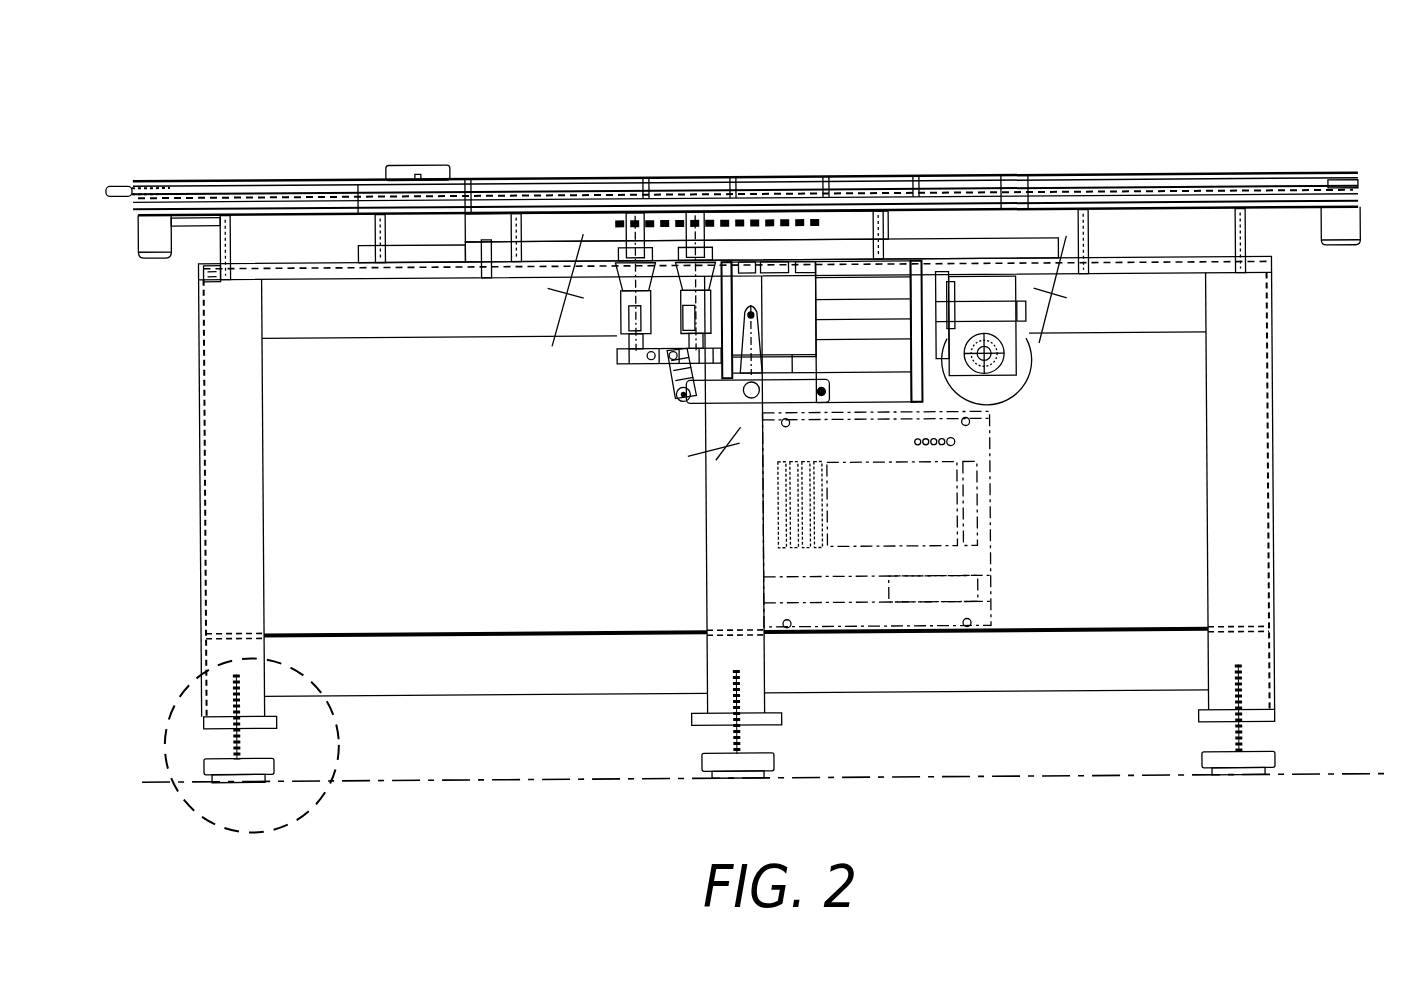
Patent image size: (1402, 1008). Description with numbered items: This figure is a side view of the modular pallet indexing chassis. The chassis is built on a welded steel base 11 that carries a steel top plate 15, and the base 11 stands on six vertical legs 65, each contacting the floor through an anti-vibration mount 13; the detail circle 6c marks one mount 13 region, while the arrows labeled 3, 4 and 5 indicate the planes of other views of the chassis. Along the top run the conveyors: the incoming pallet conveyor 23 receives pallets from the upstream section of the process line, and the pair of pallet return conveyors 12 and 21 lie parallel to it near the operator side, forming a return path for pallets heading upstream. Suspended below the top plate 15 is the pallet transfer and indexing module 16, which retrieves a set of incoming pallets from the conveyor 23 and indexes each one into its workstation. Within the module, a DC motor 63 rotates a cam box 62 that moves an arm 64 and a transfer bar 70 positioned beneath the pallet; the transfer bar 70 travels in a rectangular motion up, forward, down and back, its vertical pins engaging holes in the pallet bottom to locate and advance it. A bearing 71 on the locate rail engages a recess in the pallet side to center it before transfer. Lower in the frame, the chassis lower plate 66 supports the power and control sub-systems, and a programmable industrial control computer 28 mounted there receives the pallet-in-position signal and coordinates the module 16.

The welded steel base 11 is at (203, 565).
The pallet return conveyor 12 is at (1356, 187).
The anti-vibration mount 13 is at (205, 775).
The top plate 15 is at (203, 268).
The pallet transfer and indexing module 16 is at (650, 376).
The pallet return conveyor 21 is at (150, 200).
The incoming pallet conveyor 23 is at (115, 183).
The programmable industrial control computer 28 is at (980, 560).
The cam box 62 is at (793, 317).
The DC motor 63 is at (1018, 375).
The arm 64 is at (703, 403).
The vertical leg 65 is at (243, 518).
The chassis lower plate 66 is at (400, 626).
The transfer bar 70 is at (640, 237).
The bearing 71 is at (713, 180).
The detail view circle 6c is at (183, 672).
The section view indicator 3 is at (1388, 474).
The section view indicator 4 is at (595, 158).
The section view indicator 5 is at (157, 262).